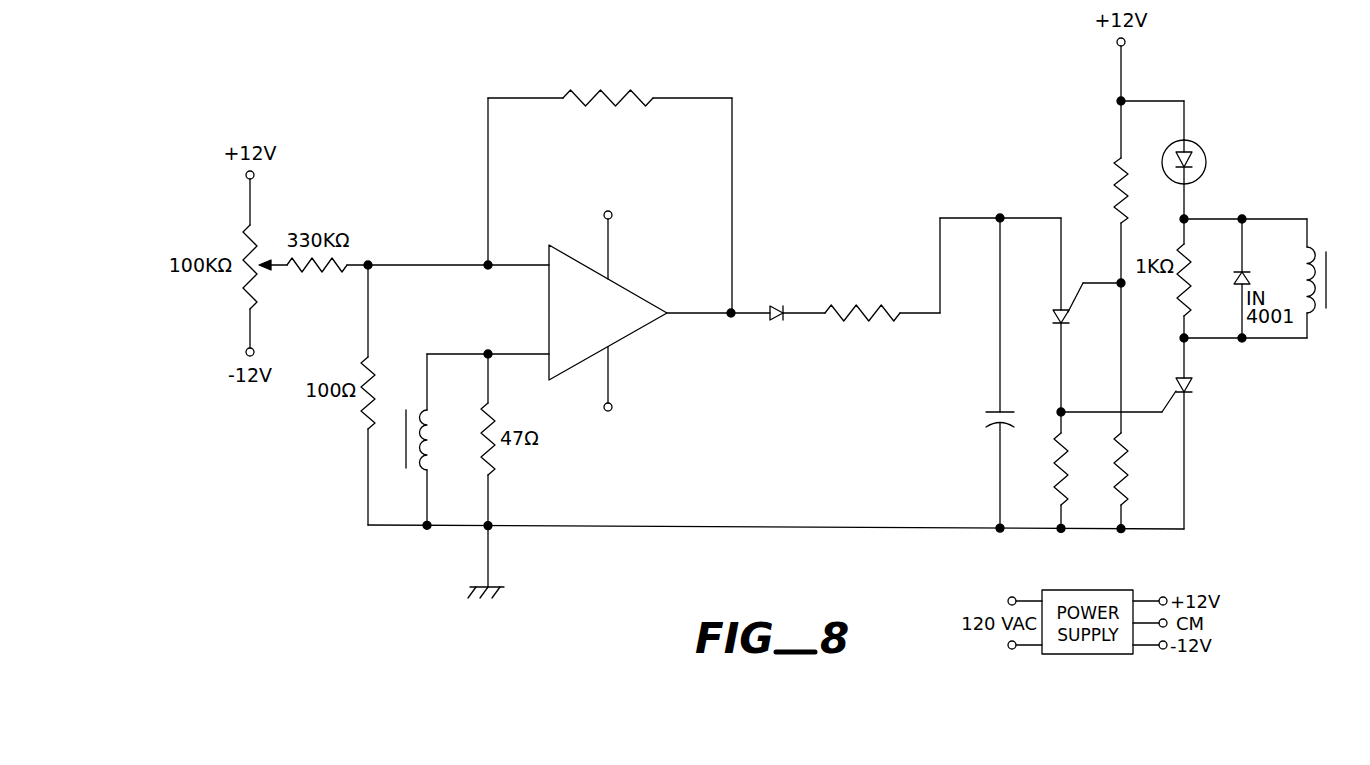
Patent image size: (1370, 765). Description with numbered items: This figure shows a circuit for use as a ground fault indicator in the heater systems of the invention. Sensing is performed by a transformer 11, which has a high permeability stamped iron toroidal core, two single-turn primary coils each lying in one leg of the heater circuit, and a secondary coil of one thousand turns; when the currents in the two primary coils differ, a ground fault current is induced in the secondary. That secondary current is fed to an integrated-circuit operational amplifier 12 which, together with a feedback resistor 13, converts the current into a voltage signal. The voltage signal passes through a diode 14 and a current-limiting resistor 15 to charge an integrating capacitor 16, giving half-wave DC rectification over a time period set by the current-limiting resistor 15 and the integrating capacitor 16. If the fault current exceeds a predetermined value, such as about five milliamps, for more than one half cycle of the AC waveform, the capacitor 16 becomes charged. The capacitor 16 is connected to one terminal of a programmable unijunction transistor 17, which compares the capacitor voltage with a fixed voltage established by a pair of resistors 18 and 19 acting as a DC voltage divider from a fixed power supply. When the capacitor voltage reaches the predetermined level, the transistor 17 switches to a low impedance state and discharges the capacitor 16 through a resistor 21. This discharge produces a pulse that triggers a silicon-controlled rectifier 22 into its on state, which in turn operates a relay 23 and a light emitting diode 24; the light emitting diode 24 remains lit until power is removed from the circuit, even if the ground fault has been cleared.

The transformer 11 is at (431, 453).
The operational amplifier 12 is at (640, 330).
The feedback resistor 13 is at (623, 104).
The diode 14 is at (777, 321).
The current-limiting resistor 15 is at (855, 321).
The integrating capacitor 16 is at (985, 428).
The programmable unijunction transistor 17 is at (1055, 310).
The resistor 18 is at (1122, 160).
The resistor 19 is at (1125, 475).
The resistor 21 is at (1053, 473).
The silicon-controlled rectifier 22 is at (1193, 375).
The relay 23 is at (1317, 317).
The light emitting diode 24 is at (1210, 163).